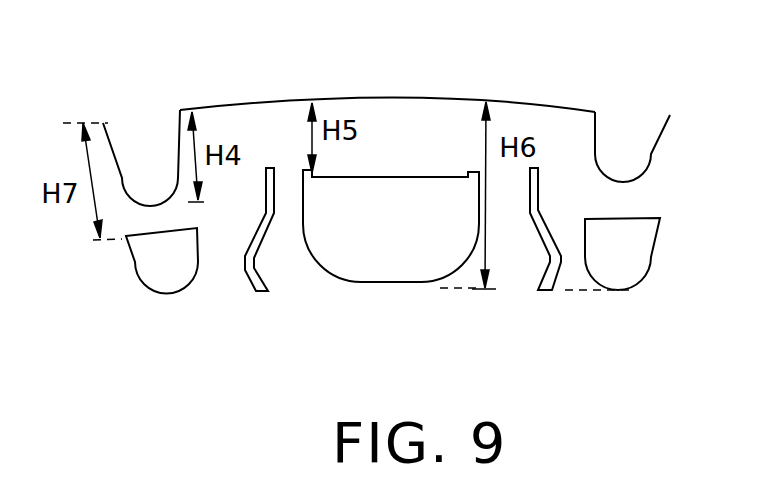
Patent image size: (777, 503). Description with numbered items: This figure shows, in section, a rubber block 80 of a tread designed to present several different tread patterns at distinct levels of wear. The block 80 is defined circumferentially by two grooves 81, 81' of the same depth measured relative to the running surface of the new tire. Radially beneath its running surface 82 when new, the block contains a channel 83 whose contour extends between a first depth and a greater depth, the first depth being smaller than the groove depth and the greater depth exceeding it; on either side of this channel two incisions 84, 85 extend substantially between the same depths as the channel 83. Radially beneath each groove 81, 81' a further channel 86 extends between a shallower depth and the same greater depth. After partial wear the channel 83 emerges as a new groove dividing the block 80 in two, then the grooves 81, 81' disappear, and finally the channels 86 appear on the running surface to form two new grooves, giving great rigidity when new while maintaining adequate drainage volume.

The block 80 is at (386, 108).
The groove 81 is at (141, 131).
The groove 81' is at (632, 116).
The running surface 82 is at (420, 98).
The channel 83 is at (412, 268).
The incision 84 is at (256, 250).
The incision 85 is at (552, 283).
The channel 86 is at (168, 282).